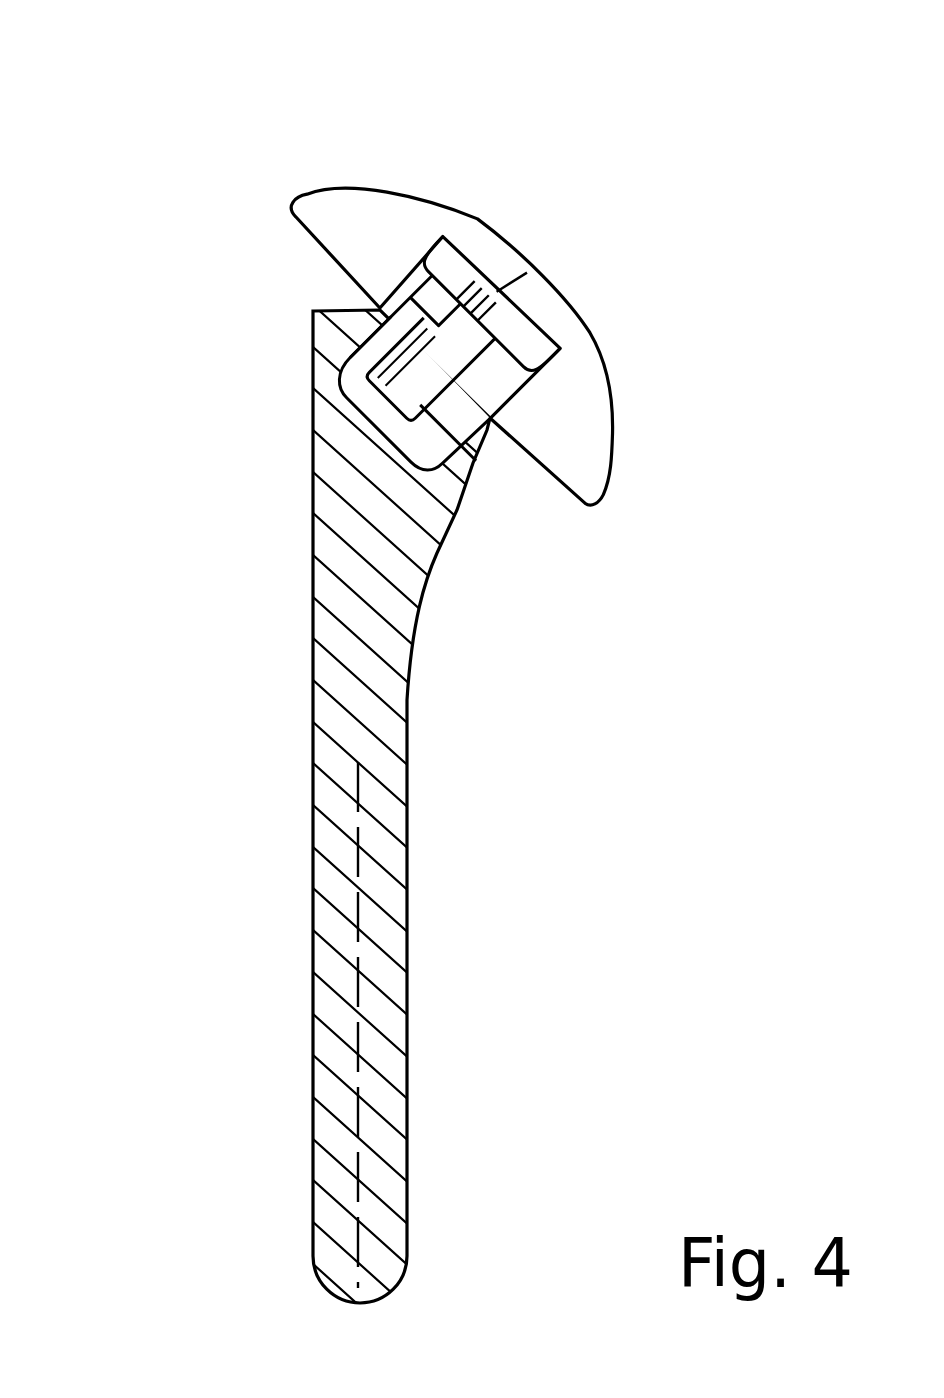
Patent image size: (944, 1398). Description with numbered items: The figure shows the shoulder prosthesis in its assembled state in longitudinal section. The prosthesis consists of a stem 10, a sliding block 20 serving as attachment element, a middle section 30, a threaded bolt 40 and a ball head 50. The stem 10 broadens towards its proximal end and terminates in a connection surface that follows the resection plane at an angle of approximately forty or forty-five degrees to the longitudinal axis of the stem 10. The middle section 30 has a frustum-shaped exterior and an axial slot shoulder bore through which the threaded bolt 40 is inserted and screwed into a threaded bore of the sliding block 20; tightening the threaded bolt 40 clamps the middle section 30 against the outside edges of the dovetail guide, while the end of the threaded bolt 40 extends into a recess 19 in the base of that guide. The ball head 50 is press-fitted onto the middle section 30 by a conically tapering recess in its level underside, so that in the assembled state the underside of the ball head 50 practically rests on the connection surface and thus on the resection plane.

The stem 10 is at (395, 939).
The recess 19 is at (367, 450).
The sliding block 20 is at (487, 467).
The middle section 30 is at (507, 378).
The threaded bolt 40 is at (385, 387).
The ball head 50 is at (418, 217).